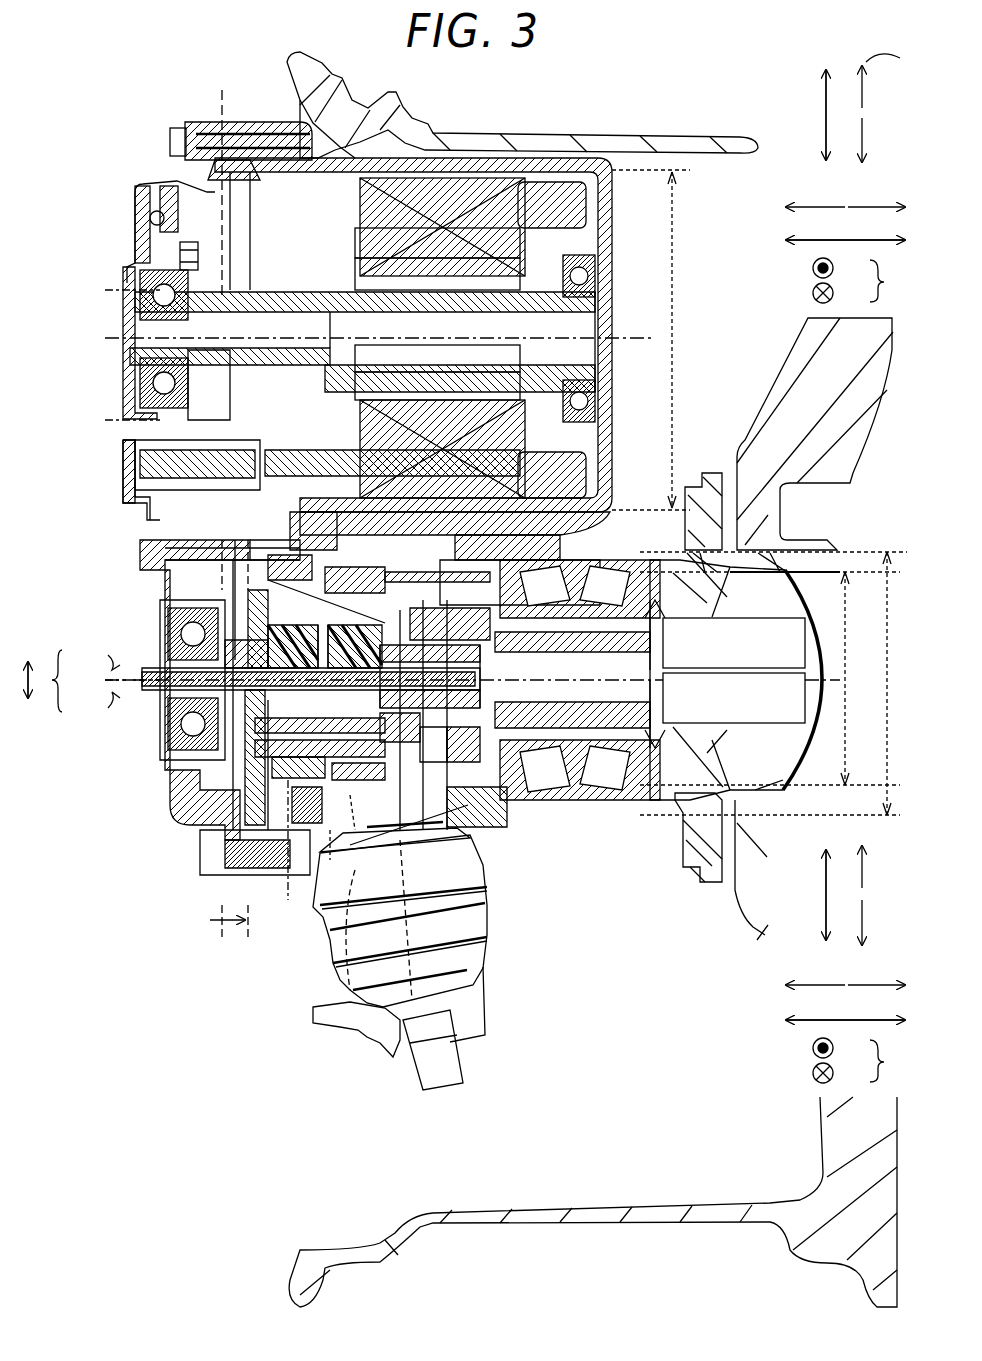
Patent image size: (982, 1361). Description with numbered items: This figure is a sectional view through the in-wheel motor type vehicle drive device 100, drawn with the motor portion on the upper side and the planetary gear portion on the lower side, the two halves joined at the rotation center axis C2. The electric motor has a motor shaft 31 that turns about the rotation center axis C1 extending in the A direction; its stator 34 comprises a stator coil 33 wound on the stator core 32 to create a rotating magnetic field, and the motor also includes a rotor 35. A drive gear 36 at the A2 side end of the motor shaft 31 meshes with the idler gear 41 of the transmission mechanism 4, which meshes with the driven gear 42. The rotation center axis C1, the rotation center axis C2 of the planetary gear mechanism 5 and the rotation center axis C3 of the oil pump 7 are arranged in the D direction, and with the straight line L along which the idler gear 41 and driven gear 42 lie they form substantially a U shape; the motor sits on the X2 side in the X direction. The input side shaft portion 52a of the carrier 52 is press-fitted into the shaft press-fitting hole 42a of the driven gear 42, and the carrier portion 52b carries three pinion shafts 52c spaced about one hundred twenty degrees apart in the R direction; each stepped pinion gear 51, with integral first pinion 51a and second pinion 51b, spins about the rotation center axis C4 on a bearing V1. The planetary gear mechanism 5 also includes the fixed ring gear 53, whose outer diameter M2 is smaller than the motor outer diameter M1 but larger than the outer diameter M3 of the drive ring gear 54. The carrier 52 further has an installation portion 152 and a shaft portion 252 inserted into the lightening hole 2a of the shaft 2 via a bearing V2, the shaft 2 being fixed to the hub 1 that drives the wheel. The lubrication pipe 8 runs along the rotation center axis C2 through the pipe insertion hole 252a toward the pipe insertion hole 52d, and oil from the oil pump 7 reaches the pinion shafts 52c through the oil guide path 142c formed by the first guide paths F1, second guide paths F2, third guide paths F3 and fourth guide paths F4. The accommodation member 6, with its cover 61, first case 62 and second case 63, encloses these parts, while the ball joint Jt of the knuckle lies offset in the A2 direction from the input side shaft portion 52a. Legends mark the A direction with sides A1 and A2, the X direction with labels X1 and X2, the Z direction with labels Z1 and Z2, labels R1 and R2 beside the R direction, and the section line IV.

The in-wheel motor type vehicle drive device 100 is at (122, 178).
The hub 1 is at (723, 602).
The shaft 2 is at (596, 725).
The lightening hole 2a is at (530, 662).
The transmission mechanism 4 is at (165, 520).
The planetary gear mechanism 5 is at (305, 498).
The accommodation member 6 is at (160, 540).
The oil pump 7 is at (145, 382).
The lubrication pipe 8 is at (145, 705).
The motor shaft 31 is at (598, 298).
The stator core 32 is at (370, 415).
The stator coil 33 is at (588, 200).
The stator 34 is at (600, 448).
The rotor 35 is at (600, 412).
The drive gear 36 is at (212, 320).
The idler gear 41 is at (190, 400).
The driven gear 42 is at (175, 608).
The shaft press-fitting hole 42a is at (160, 620).
The pinion gear 51 is at (260, 850).
The first pinion 51a is at (360, 875).
The second pinion 51b is at (330, 850).
The carrier 52 is at (308, 520).
The input side shaft portion 52a is at (175, 718).
The carrier portion 52b is at (215, 760).
The pinion shaft 52c is at (420, 840).
The pipe insertion hole 52d is at (305, 625).
The fixed ring gear 53 is at (268, 478).
The drive ring gear 54 is at (335, 550).
The cover 61 is at (160, 548).
The first case 62 is at (238, 125).
The second case 63 is at (278, 125).
The oil guide path 142c is at (200, 850).
The installation portion 152 is at (360, 567).
The shaft portion 252 is at (480, 540).
The pipe insertion hole 252a is at (440, 590).
The straight line L is at (212, 120).
The ball joint Jt is at (500, 938).
The rotation center axis of the electric motor C1 is at (108, 312).
The rotation center axis of the planetary gear mechanism C2 is at (130, 660).
The rotation center axis of the oil pump C3 is at (112, 452).
The rotation center axis of the pinion gear C4 is at (271, 840).
The first guide path F1 is at (205, 775).
The second guide path F2 is at (215, 800).
The third guide path F3 is at (215, 868).
The fourth guide path F4 is at (440, 790).
The bearing V1 is at (345, 860).
The bearing V2 is at (505, 540).
The section line IV is at (229, 742).
The outer diameter of the electric motor M1 is at (660, 340).
The outer diameter of the fixed ring gear M2 is at (799, 629).
The outer diameter of the drive ring gear M3 is at (863, 672).
The D direction D is at (17, 680).
The R direction R is at (49, 681).
The rotation direction R1 is at (96, 660).
The rotation direction R2 is at (96, 698).
The X direction X is at (839, 115).
The X1 direction X1 is at (856, 563).
The X2 direction X2 is at (860, 602).
The A direction A is at (845, 615).
The A1 direction A1 is at (845, 581).
The A2 direction A2 is at (845, 581).
The Z direction Z is at (866, 600).
The Z1 direction Z1 is at (856, 571).
The Z2 direction Z2 is at (856, 612).